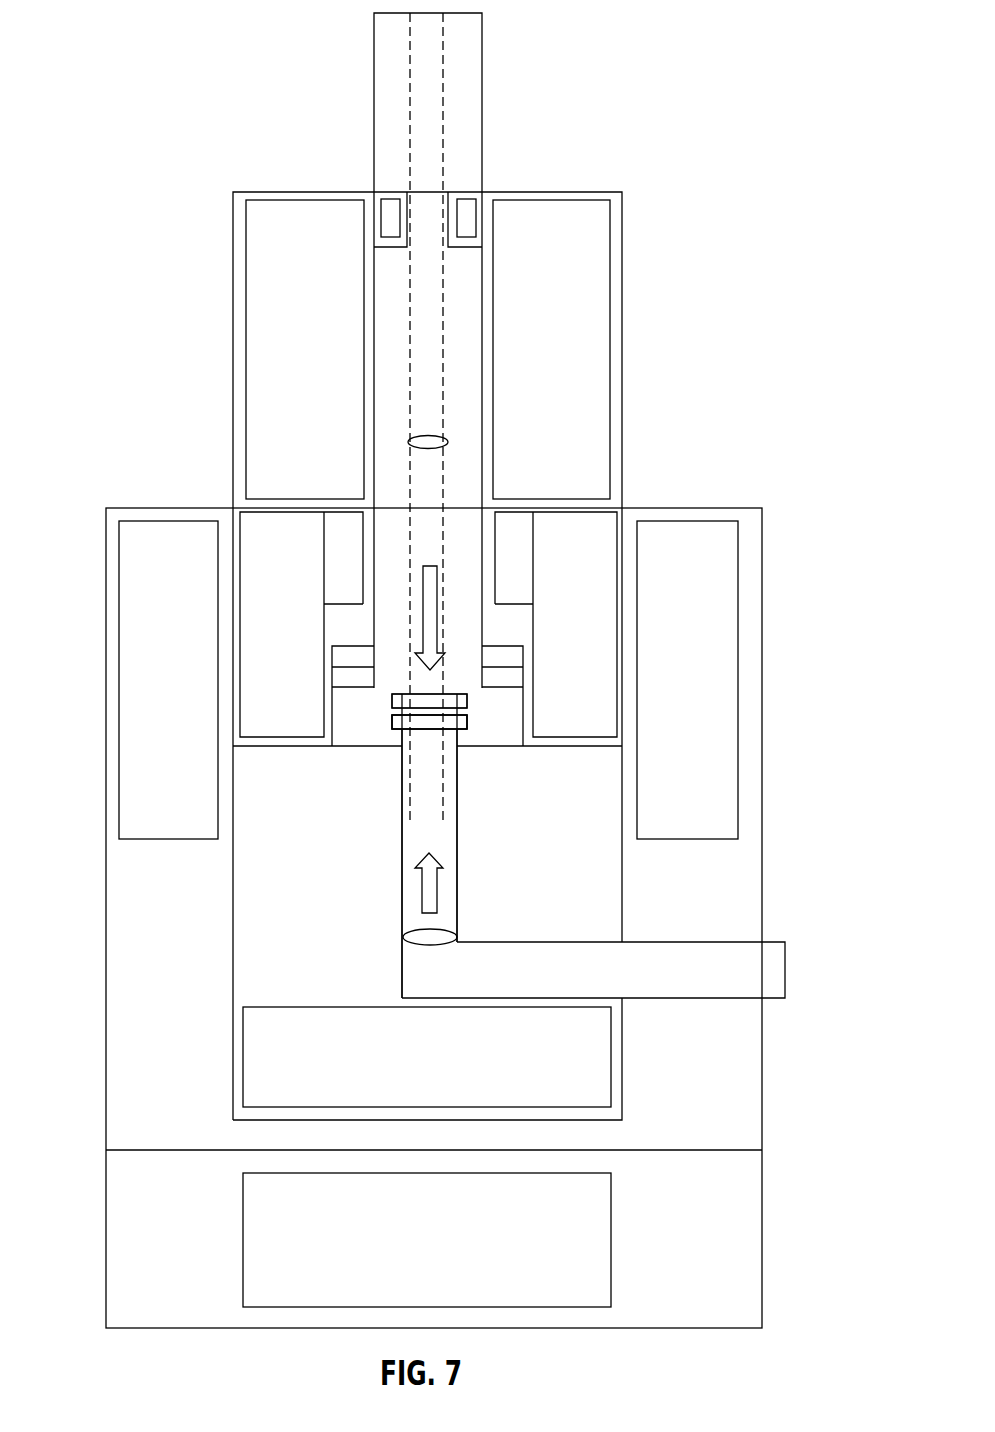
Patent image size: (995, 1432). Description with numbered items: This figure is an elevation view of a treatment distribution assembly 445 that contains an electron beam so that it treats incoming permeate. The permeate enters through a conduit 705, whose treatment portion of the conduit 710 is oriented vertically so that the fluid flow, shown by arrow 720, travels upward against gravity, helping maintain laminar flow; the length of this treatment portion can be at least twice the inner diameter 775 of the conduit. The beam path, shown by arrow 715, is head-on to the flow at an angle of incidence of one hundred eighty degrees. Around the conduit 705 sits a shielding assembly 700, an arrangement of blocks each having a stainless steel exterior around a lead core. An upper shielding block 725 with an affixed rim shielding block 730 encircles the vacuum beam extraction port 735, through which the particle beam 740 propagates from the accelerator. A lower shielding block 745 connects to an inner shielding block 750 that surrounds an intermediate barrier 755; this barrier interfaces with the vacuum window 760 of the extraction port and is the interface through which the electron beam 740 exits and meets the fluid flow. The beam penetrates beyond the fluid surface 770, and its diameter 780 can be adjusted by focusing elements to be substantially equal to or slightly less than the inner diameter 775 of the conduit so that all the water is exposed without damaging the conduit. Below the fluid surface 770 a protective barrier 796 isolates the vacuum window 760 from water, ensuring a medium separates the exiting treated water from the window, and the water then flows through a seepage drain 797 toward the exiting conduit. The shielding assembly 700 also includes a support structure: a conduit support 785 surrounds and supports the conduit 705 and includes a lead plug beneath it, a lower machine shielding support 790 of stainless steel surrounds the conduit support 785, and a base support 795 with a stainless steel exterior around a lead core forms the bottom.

The treatment distribution assembly 445 is at (641, 112).
The shielding assembly 700 is at (650, 268).
The conduit 705 is at (766, 972).
The treatment portion of the conduit 710 is at (462, 838).
The arrow showing beam path 715 is at (445, 621).
The arrow showing fluid flow 720 is at (441, 880).
The upper shielding block 725 is at (282, 360).
The rim shielding block 730 is at (378, 218).
The vacuum beam extraction port 735 is at (372, 127).
The particle beam 740 is at (462, 70).
The lower shielding block 745 is at (146, 560).
The inner shielding block 750 is at (270, 525).
The intermediate barrier 755 is at (357, 710).
The vacuum window 760 is at (490, 677).
The fluid surface 770 is at (474, 720).
The inner diameter of the conduit 775 is at (398, 937).
The diameter of the electron beam 780 is at (404, 442).
The conduit support 785 is at (278, 965).
The lower machine shielding support 790 is at (147, 1077).
The base support 795 is at (147, 1247).
The protective barrier 796 is at (388, 719).
The seepage drain 797 is at (473, 701).